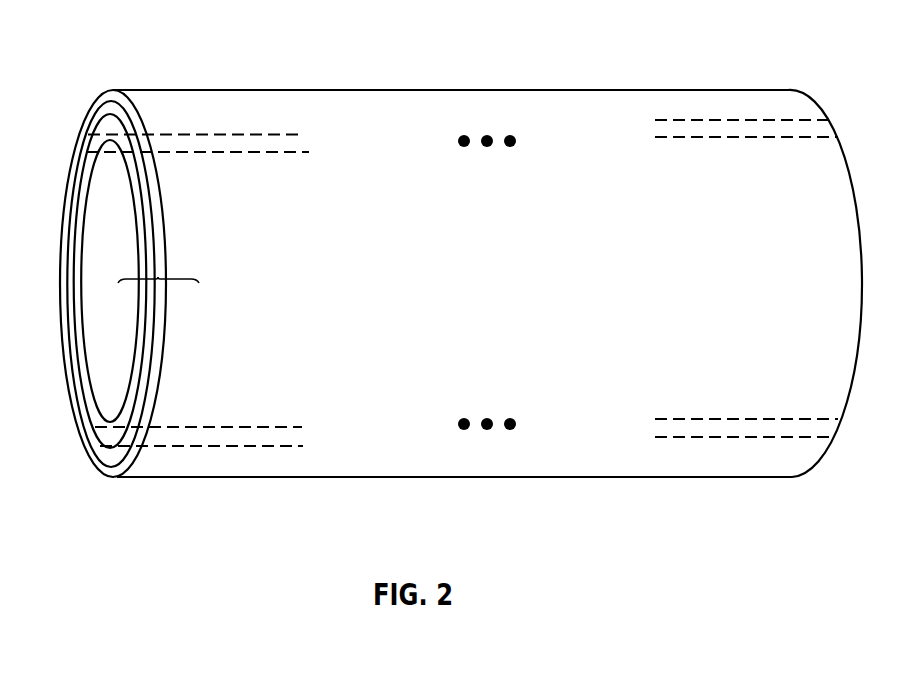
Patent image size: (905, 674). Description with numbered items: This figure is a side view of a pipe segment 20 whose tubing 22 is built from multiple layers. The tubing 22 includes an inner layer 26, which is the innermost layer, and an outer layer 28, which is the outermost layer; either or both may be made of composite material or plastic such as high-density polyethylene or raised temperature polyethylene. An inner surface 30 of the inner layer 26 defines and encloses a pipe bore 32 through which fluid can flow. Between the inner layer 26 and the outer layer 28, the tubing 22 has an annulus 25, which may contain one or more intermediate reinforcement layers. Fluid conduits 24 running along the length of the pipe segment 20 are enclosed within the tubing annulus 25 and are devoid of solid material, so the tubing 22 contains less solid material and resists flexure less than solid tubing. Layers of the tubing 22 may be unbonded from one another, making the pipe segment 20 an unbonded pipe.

The pipe segment 20 is at (78, 49).
The tubing 22 is at (158, 277).
The fluid conduit 24 is at (86, 150).
The tubing annulus 25 is at (132, 430).
The inner layer 26 is at (93, 415).
The outer layer 28 is at (100, 463).
The inner surface 30 is at (99, 201).
The pipe bore 32 is at (102, 296).